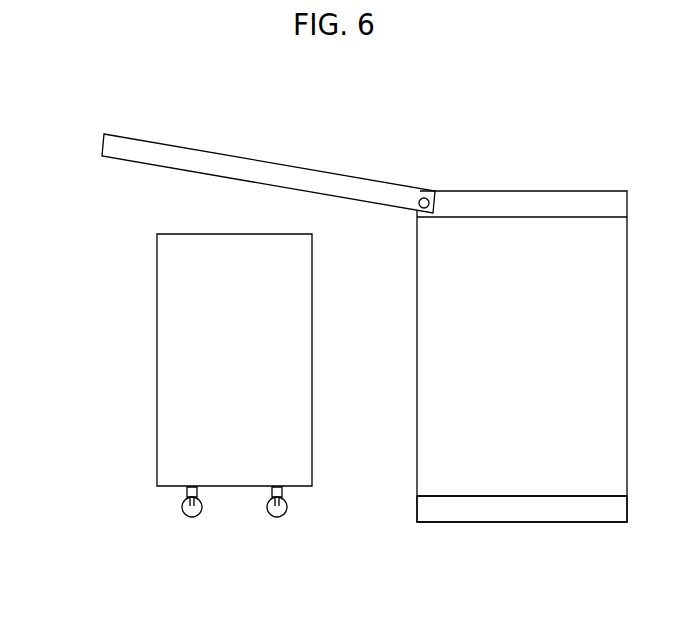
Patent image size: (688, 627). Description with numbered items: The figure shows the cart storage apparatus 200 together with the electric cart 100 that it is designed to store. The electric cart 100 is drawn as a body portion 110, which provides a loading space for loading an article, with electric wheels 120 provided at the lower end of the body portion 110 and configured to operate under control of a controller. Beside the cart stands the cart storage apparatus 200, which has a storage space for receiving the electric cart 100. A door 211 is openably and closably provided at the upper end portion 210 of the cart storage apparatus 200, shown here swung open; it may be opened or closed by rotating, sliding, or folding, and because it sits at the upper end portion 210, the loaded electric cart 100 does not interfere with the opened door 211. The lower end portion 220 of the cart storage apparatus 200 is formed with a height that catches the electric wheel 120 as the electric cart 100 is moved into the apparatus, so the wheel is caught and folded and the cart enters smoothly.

The electric cart 100 is at (172, 418).
The body portion 110 is at (157, 333).
The electric wheels 120 is at (199, 516).
The cart storage apparatus 200 is at (364, 345).
The upper end portion 210 is at (484, 194).
The door 211 is at (243, 163).
The lower end portion 220 is at (483, 516).